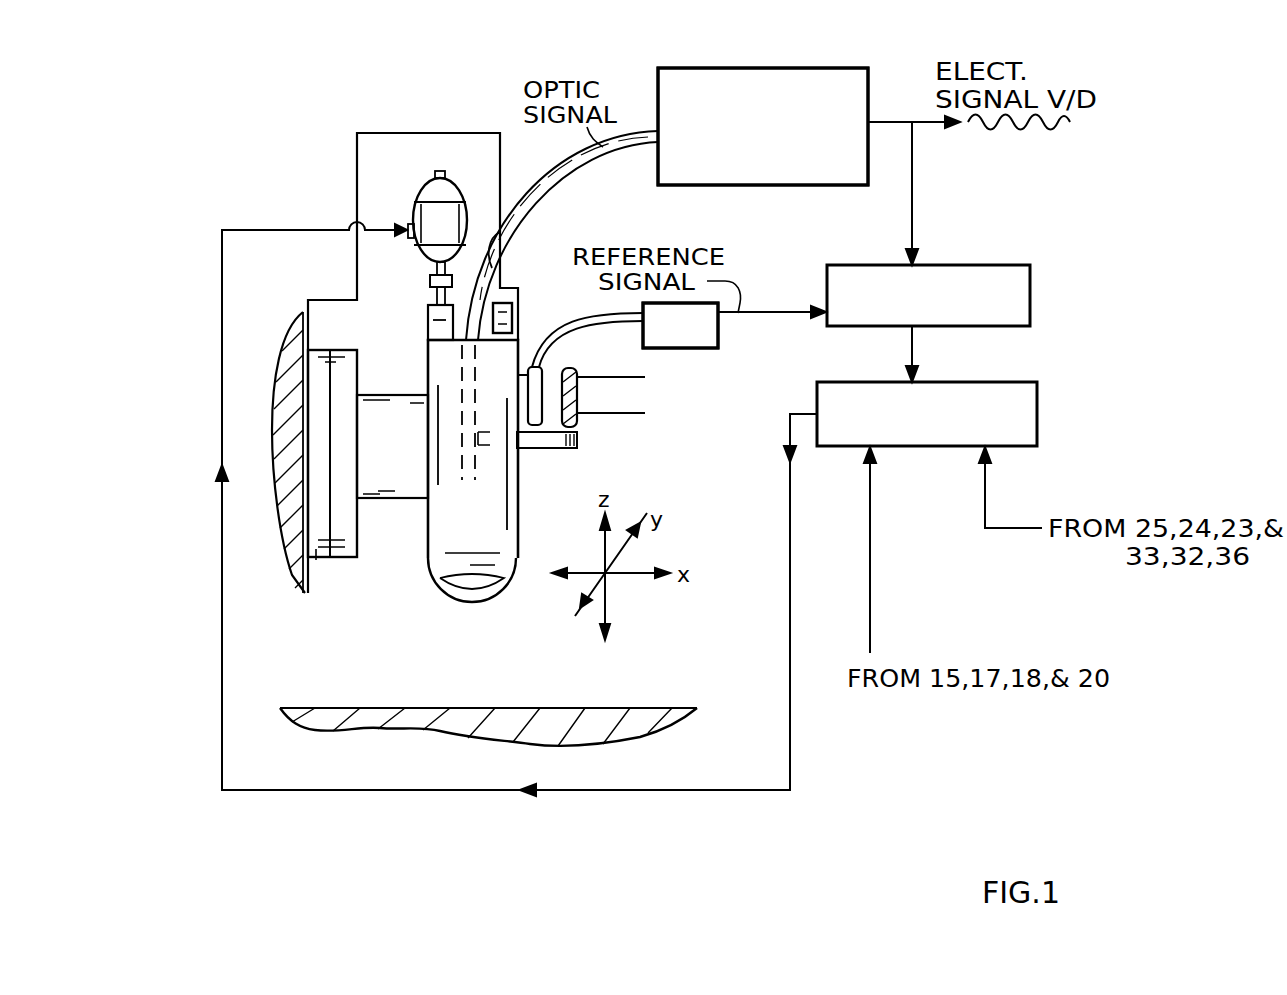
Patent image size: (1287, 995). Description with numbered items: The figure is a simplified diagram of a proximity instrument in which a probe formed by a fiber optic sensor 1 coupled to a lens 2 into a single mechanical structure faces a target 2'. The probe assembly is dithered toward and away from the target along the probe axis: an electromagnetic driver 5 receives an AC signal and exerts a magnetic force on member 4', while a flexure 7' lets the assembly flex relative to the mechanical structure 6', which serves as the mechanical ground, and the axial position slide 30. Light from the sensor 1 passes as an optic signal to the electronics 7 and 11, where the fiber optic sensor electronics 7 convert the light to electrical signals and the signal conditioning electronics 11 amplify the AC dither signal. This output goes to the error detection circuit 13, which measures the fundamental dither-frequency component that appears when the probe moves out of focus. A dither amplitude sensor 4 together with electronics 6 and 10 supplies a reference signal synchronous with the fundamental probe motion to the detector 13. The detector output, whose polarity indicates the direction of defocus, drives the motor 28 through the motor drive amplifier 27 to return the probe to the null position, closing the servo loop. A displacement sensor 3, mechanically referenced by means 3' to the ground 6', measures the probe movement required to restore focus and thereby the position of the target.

The fiber optic sensor 1 is at (527, 222).
The lens 2 is at (461, 482).
The target 2' is at (488, 701).
The displacement sensor 3 is at (518, 311).
The mechanical reference means 3' is at (413, 363).
The dither amplitude sensor 4 is at (580, 369).
The member 4' is at (547, 458).
The electromagnetic driver 5 is at (573, 368).
The electronics 6 is at (680, 325).
The mechanical structure 6' is at (283, 431).
The fiber optic sensor electronics 7 is at (763, 126).
The flexure 7' is at (391, 398).
The electronics 10 is at (711, 343).
The signal conditioning electronics 11 is at (804, 151).
The error detection circuit 13 is at (1017, 302).
The motor drive amplifier 27 is at (1022, 432).
The motor 28 is at (424, 196).
The axial position slide 30 is at (320, 560).